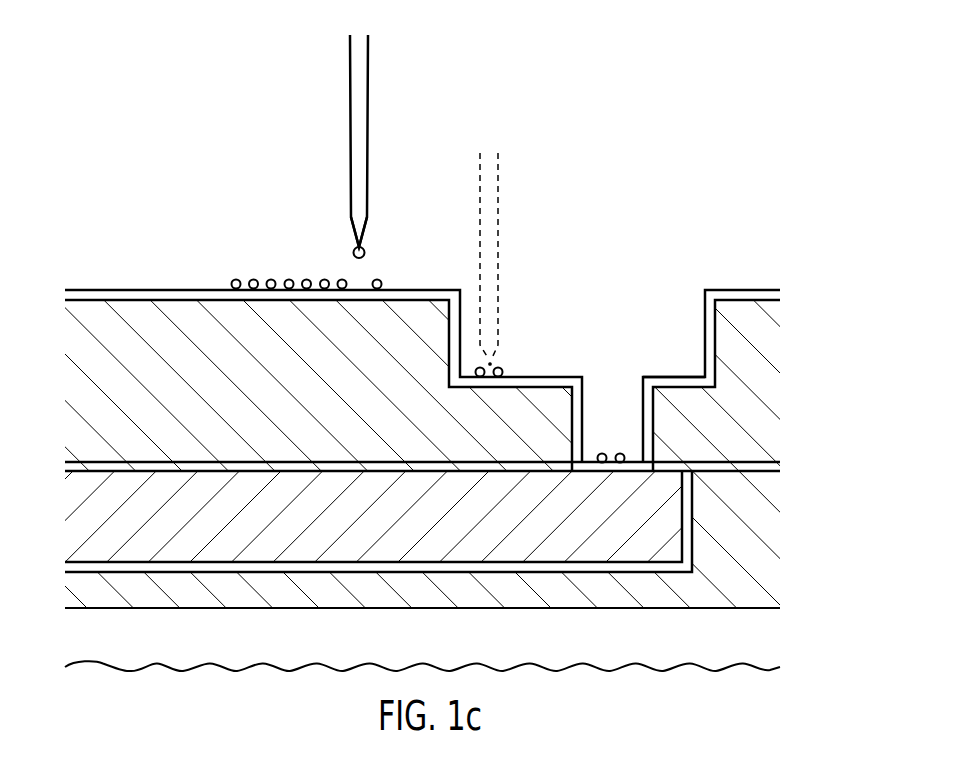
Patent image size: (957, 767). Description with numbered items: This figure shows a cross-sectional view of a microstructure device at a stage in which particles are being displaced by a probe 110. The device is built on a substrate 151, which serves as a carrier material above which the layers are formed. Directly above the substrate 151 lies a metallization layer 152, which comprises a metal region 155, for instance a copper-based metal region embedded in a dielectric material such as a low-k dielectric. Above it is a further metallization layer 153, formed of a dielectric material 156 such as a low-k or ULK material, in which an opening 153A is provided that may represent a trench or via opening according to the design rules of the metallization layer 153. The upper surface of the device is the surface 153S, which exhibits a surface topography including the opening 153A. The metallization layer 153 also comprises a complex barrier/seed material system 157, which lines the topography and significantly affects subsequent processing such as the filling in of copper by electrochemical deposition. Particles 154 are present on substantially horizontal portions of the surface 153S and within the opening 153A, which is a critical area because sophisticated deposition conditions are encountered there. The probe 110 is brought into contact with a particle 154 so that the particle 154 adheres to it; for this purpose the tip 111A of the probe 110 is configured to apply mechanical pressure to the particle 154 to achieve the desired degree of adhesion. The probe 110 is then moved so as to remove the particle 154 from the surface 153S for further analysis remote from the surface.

The probe 110 is at (368, 52).
The tip of the probe 111A is at (352, 224).
The particle 154 is at (353, 252).
The surface 153S is at (746, 288).
The opening 153A is at (688, 317).
The barrier/seed material system 157 is at (526, 376).
The dielectric material 156 is at (335, 395).
The metal region 155 is at (335, 528).
The metallization layer 153 is at (808, 436).
The metallization layer 152 is at (808, 533).
The substrate 151 is at (770, 645).